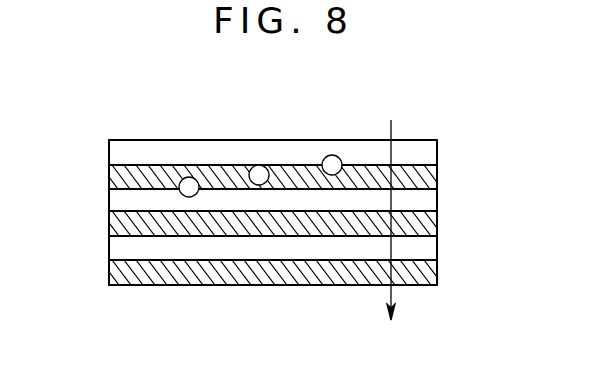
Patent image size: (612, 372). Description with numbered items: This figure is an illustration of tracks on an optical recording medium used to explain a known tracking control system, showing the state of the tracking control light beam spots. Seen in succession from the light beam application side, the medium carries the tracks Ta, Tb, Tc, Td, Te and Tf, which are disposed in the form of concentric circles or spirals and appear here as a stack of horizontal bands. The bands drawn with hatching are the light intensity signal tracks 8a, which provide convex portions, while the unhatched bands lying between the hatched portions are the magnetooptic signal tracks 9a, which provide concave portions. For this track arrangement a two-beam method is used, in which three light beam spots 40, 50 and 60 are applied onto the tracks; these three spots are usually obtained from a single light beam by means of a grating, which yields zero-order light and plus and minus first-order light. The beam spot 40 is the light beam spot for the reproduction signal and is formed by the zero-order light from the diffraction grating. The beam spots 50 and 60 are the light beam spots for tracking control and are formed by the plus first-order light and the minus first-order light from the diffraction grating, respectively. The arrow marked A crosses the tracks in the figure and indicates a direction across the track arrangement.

The magnetooptic signal track 9a is at (426, 153).
The light intensity signal track 8a is at (426, 178).
The light beam spot for tracking control 60 is at (188, 177).
The light beam spot for reproduction signal 40 is at (259, 165).
The light beam spot for tracking control 50 is at (332, 155).
The cross-section direction A is at (393, 150).
The track Ta is at (112, 158).
The track Tb is at (114, 184).
The track Tc is at (116, 206).
The track Td is at (116, 230).
The track Te is at (116, 253).
The track Tf is at (114, 278).